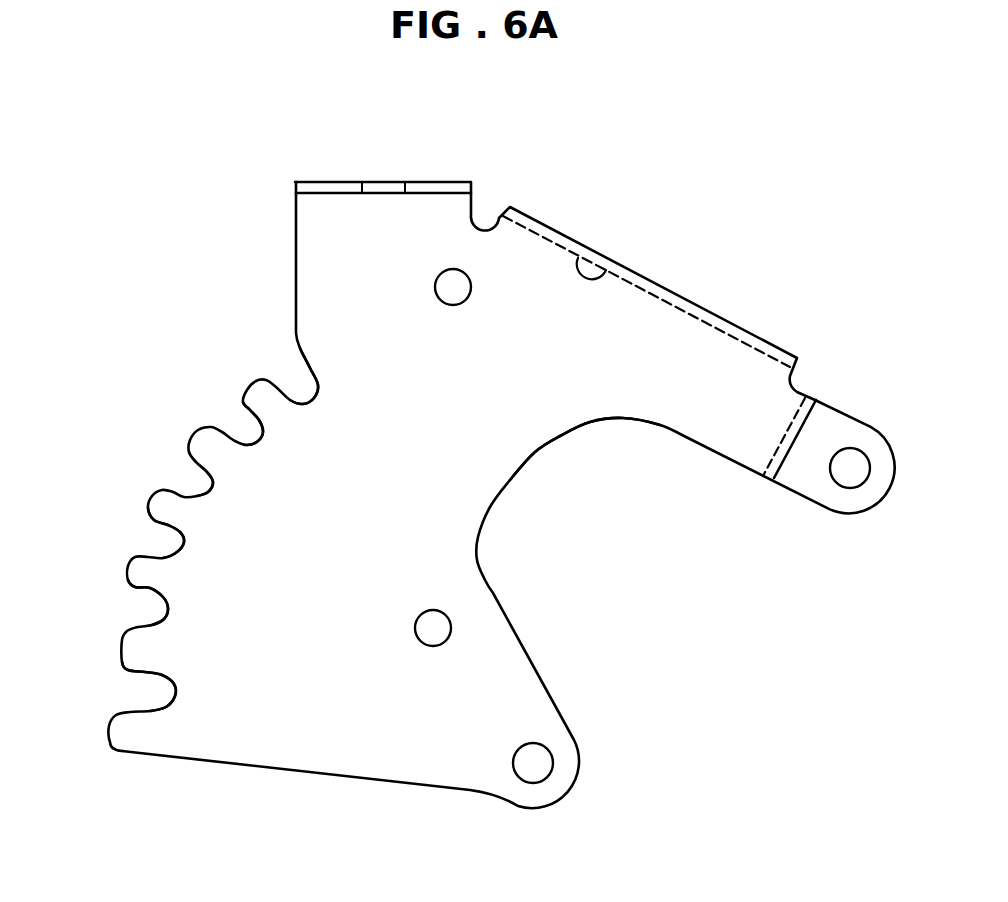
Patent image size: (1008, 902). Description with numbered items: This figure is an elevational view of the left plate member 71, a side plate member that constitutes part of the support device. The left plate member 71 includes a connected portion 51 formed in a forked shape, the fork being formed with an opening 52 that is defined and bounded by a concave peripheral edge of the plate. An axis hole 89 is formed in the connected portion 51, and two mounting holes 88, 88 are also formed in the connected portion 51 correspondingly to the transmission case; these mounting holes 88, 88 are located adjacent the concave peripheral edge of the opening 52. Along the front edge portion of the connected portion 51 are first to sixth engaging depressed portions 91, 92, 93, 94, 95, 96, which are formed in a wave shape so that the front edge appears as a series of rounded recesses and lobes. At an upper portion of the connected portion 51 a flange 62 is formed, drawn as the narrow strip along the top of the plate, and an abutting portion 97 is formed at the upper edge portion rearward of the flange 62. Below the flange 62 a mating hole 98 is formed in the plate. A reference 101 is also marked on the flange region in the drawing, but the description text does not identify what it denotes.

The left plate member 71 is at (288, 160).
The flange 62 is at (343, 181).
The flange segment 101 is at (405, 190).
The connected portion 51 is at (660, 383).
The opening 52 is at (537, 452).
The abutting portion 97 is at (600, 278).
The mating hole 98 is at (472, 282).
The mounting holes 88 is at (855, 487).
The axis hole 89 is at (452, 632).
The first engaging depressed portion 91 is at (173, 690).
The second engaging depressed portion 92 is at (166, 607).
The third engaging depressed portion 93 is at (180, 547).
The fourth engaging depressed portion 94 is at (203, 490).
The fifth engaging depressed portion 95 is at (251, 442).
The sixth engaging depressed portion 96 is at (305, 400).